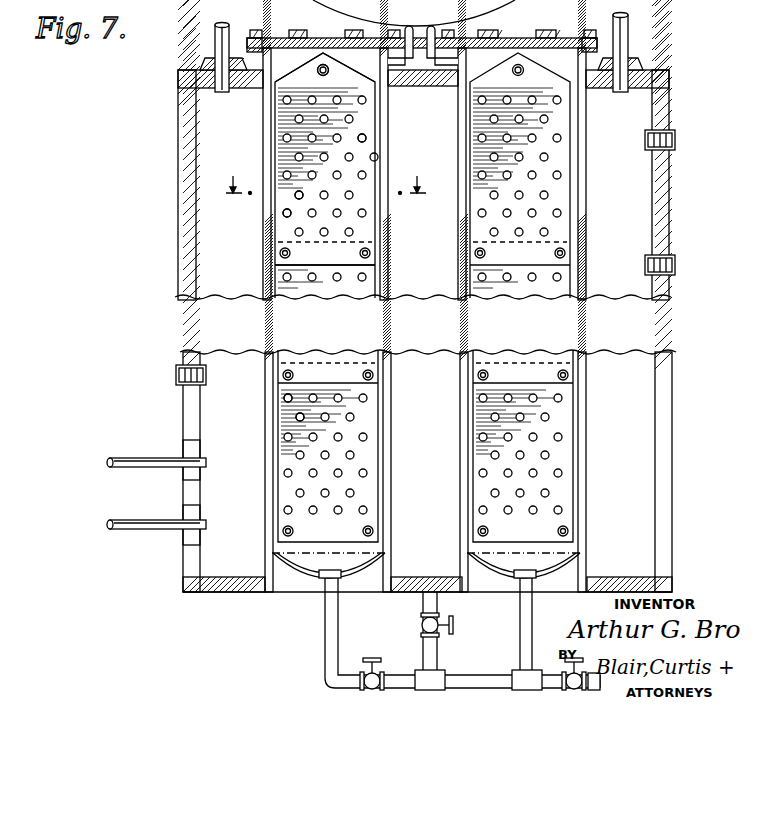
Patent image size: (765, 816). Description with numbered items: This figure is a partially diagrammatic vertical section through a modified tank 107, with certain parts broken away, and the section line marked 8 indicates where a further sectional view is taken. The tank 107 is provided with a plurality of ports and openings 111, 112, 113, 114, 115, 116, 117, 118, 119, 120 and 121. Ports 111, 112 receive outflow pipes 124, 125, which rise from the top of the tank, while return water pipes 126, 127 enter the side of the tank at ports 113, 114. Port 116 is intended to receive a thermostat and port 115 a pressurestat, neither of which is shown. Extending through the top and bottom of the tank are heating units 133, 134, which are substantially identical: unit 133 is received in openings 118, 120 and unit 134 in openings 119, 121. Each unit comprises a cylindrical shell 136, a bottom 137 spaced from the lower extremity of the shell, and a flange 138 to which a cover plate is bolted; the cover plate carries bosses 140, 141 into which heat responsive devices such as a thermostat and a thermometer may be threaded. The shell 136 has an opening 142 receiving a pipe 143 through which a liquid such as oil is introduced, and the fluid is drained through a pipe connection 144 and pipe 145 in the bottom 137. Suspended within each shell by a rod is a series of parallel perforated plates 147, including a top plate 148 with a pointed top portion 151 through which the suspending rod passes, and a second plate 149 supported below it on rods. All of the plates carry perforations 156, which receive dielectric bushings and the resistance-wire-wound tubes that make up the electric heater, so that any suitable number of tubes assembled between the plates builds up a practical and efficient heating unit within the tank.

The tank 107 is at (178, 150).
The port 111 is at (219, 92).
The port 112 is at (612, 93).
The port 113 is at (203, 452).
The port 114 is at (200, 517).
The port 115 is at (196, 362).
The port 116 is at (669, 255).
The port 117 is at (672, 130).
The opening 118 is at (250, 89).
The opening 119 is at (431, 72).
The opening 120 is at (401, 578).
The opening 121 is at (597, 578).
The outflow pipe 124 is at (218, 40).
The outflow pipe 125 is at (625, 30).
The return water pipe 126 is at (128, 458).
The return water pipe 127 is at (128, 520).
The heating unit 133 is at (257, 282).
The heating unit 134 is at (595, 278).
The shell 136 is at (399, 275).
The bottom 137 is at (297, 578).
The flange 138 is at (254, 48).
The boss 140 is at (298, 31).
The boss 141 is at (339, 38).
The opening 142 is at (378, 62).
The pipe 143 is at (407, 70).
The pipe connection 144 is at (337, 570).
The pipe 145 is at (325, 670).
The perforated plates 147 is at (373, 234).
The top plate 148 is at (292, 201).
The plate 149 is at (310, 289).
The pointed top portion 151 is at (314, 68).
The perforations 156 is at (375, 158).
The section line 8- 8 is at (324, 190).